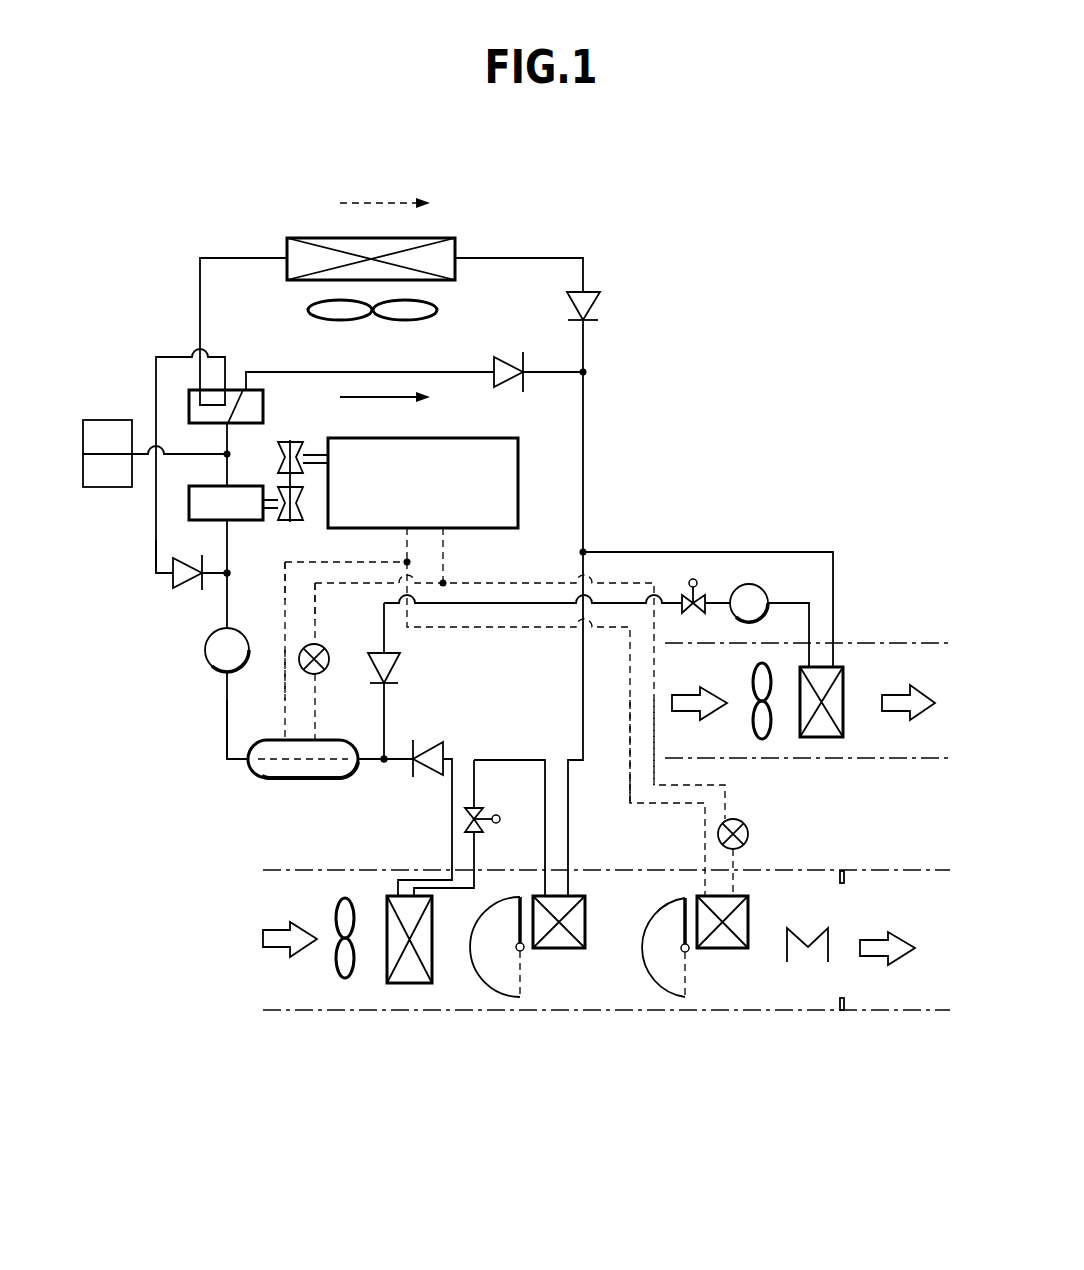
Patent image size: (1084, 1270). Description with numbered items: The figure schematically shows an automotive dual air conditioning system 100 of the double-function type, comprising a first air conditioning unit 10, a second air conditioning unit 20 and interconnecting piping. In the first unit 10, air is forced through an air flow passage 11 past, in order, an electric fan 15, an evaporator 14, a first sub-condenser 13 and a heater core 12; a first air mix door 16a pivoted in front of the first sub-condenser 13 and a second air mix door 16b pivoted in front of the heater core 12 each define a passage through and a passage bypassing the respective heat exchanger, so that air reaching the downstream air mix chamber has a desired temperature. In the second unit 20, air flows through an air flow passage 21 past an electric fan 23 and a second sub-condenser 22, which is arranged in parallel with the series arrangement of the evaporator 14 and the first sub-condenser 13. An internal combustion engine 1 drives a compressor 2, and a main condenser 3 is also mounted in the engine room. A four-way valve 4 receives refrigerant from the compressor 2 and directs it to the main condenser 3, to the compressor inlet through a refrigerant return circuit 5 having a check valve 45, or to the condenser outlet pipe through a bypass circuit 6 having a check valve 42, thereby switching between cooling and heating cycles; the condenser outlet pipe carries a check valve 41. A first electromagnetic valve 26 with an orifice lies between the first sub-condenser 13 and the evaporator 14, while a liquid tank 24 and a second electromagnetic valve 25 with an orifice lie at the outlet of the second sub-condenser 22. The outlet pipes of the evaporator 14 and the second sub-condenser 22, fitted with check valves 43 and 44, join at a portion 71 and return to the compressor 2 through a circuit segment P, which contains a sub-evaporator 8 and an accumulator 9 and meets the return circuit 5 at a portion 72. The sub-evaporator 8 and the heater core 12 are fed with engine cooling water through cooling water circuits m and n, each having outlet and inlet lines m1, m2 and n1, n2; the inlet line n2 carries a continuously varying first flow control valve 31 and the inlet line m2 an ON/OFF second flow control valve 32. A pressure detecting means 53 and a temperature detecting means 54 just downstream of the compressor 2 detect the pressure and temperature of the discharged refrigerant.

The internal combustion engine 1 is at (518, 470).
The compressor 2 is at (240, 486).
The main condenser 3 is at (450, 238).
The four-way valve 4 is at (263, 405).
The refrigerant return circuit 5 is at (154, 551).
The bypass circuit 6 is at (440, 371).
The sub-evaporator 8 is at (303, 778).
The accumulator 9 is at (213, 668).
The first air conditioning unit 10 is at (470, 1030).
The air flow passage 11 is at (773, 1001).
The heater core 12 is at (720, 950).
The first sub-condenser 13 is at (553, 950).
The evaporator 14 is at (410, 983).
The electric fan 15 is at (336, 910).
The first air mix door 16a is at (516, 896).
The second air mix door 16b is at (682, 897).
The second air conditioning unit 20 is at (810, 768).
The air flow passage 21 is at (863, 751).
The second sub-condenser 22 is at (843, 682).
The electric fan 23 is at (752, 680).
The liquid tank 24 is at (764, 590).
The second electromagnetic valve 25 is at (700, 582).
The first electromagnetic valve 26 is at (500, 815).
The first flow control valve 31 is at (748, 830).
The second flow control valve 32 is at (324, 672).
The check valve 41 is at (592, 292).
The check valve 42 is at (512, 355).
The check valve 43 is at (430, 742).
The check valve 44 is at (398, 662).
The check valve 45 is at (188, 588).
The pressure detector 53 is at (104, 420).
The temperature detector 54 is at (104, 487).
The joining portion 71 is at (384, 763).
The joining portion 72 is at (233, 572).
The automotive dual air conditioning system 100 is at (788, 204).
The circuit segment P is at (225, 740).
The cooling water circuit m is at (278, 680).
The water outlet line m1 is at (318, 608).
The water inlet line m2 is at (283, 578).
The cooling water circuit n is at (608, 810).
The water outlet line n1 is at (660, 741).
The water inlet line n2 is at (628, 745).